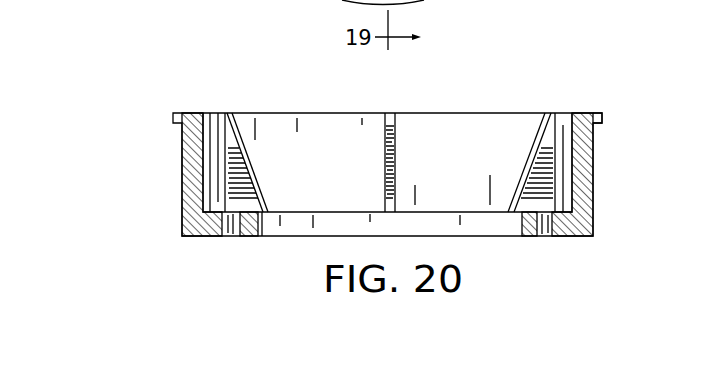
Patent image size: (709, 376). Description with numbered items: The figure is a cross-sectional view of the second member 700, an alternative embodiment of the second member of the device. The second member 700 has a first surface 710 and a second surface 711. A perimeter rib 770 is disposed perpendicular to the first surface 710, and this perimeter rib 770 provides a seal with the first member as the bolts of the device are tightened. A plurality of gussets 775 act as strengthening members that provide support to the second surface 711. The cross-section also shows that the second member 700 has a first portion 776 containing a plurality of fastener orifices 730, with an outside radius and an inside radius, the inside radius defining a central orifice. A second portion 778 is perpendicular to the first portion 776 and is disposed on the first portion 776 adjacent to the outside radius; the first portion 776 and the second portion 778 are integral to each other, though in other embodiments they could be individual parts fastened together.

The second member 700 is at (390, 165).
The gussets 775 is at (236, 124).
The second surface 711 is at (569, 133).
The perimeter rib 770 is at (603, 117).
The first surface 710 is at (595, 159).
The second portion 778 is at (186, 178).
The first portion 776 is at (202, 236).
The fastener orifices 730 is at (545, 237).